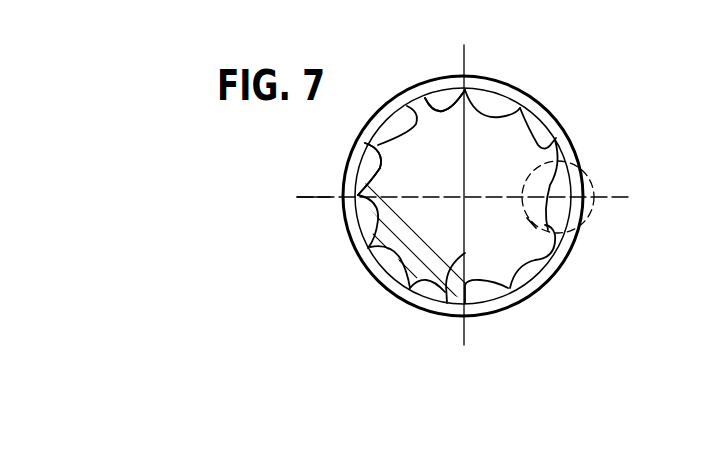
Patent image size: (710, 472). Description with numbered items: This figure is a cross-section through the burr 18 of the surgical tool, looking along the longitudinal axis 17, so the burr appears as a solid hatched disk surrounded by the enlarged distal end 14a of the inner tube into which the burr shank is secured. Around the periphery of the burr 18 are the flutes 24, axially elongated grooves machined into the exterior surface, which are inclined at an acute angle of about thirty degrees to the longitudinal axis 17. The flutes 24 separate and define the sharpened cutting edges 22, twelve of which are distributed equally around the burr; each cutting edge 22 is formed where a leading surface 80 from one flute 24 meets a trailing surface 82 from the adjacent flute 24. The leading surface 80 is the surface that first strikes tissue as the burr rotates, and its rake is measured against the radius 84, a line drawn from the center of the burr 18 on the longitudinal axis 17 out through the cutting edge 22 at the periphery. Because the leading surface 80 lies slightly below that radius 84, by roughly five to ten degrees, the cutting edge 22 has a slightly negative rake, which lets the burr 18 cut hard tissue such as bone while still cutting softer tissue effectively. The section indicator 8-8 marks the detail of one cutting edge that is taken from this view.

The distal end of inner tube 14a is at (496, 81).
The longitudinal axis 17 is at (460, 188).
The burr 18 is at (410, 265).
The cutting edge 22 is at (372, 247).
The flute 24 is at (366, 160).
The leading surface 80 is at (565, 163).
The trailing surface 82 is at (558, 222).
The section line 8-8 is at (590, 203).
The radius 84 is at (327, 200).